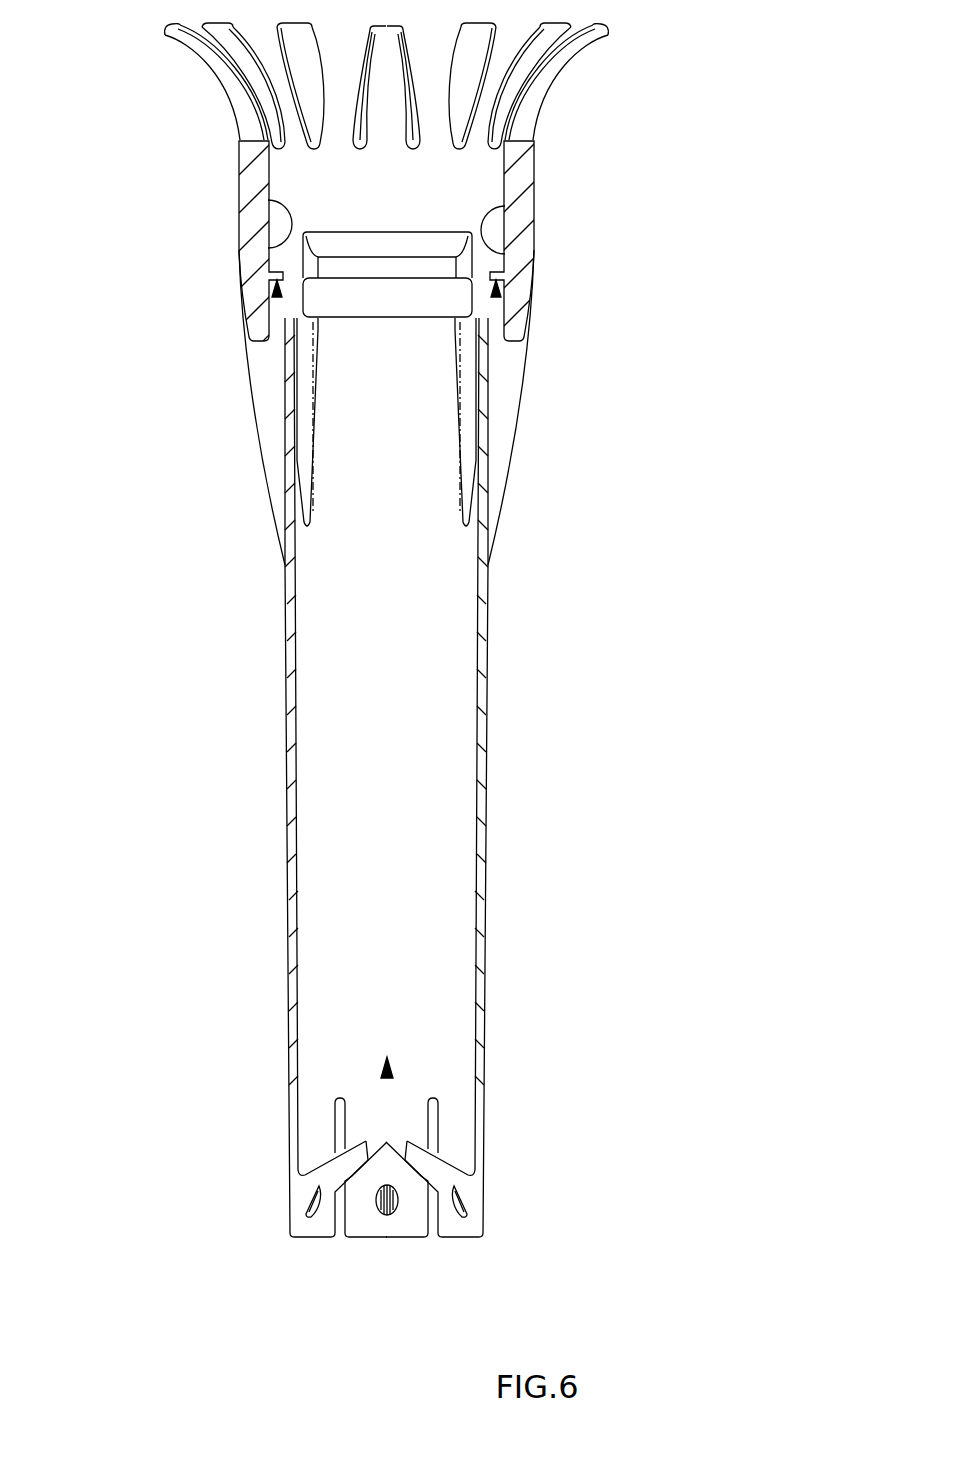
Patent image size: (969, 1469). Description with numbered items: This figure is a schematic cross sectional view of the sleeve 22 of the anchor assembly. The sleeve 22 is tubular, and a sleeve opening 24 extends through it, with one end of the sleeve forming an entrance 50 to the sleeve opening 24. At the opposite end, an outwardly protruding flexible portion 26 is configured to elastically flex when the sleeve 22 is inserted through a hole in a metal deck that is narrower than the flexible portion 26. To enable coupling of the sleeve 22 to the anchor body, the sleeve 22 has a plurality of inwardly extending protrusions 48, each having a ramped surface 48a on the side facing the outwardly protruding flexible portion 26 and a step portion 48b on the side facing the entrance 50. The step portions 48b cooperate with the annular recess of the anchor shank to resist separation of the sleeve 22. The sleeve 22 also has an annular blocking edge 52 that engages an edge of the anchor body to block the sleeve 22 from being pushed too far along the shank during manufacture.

The sleeve 22 is at (482, 778).
The sleeve opening 24 is at (387, 1078).
The outwardly protruding flexible portion 26 is at (212, 68).
The inwardly extending protrusions 48 is at (283, 270).
The ramped surface 48a is at (268, 200).
The step portion 48b is at (277, 292).
The entrance 50 is at (452, 1288).
The annular blocking edge 52 is at (293, 318).